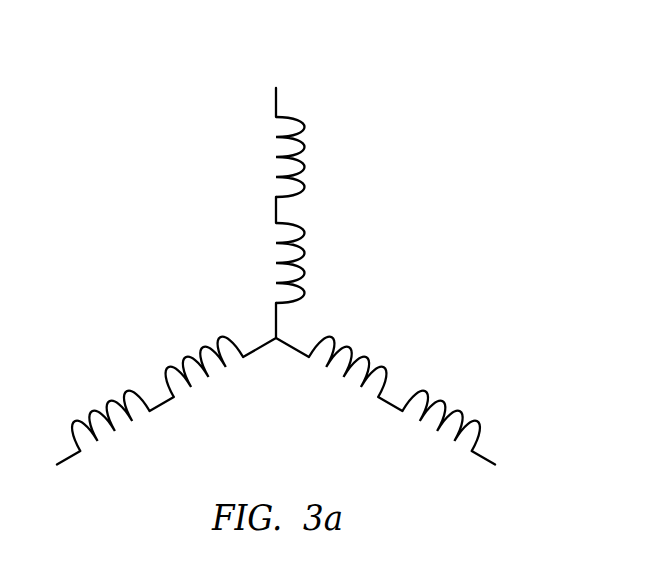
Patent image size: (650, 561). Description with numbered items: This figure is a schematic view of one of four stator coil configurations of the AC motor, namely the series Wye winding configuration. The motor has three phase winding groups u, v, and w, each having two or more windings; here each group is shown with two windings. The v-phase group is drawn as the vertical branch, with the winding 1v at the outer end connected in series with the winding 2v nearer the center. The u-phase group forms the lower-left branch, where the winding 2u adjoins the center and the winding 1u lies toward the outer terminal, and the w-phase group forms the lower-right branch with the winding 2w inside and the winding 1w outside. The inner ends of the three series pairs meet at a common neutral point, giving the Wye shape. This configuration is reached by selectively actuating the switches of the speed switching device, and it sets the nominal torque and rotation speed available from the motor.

The winding 1v is at (276, 117).
The winding 2v is at (276, 244).
The winding 1u is at (108, 400).
The winding 2u is at (202, 350).
The winding 1w is at (452, 412).
The winding 2w is at (347, 347).